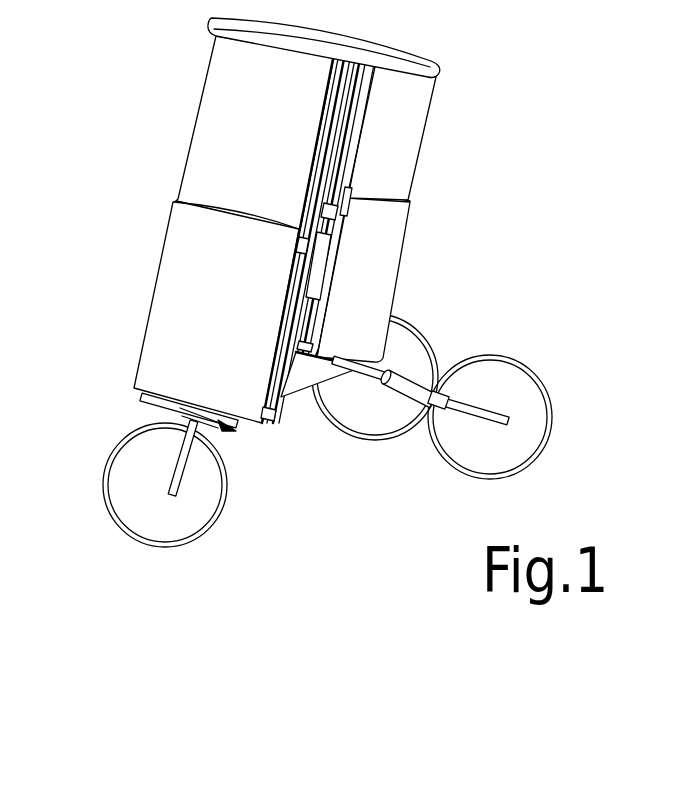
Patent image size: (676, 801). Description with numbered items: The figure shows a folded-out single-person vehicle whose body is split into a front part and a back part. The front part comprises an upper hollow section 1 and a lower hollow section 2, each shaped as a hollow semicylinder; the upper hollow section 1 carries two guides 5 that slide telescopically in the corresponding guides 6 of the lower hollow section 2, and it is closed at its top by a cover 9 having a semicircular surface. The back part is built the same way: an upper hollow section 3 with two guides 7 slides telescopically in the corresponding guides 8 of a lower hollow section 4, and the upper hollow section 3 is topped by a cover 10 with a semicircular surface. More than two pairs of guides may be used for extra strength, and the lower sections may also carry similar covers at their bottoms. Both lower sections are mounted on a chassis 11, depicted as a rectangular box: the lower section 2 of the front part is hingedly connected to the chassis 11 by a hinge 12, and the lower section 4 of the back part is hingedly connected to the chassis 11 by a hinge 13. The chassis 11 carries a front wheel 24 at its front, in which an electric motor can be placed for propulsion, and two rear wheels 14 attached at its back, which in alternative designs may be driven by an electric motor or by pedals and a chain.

The upper hollow section 1 is at (228, 113).
The lower hollow section 2 is at (220, 303).
The upper hollow section 3 is at (395, 114).
The lower hollow section 4 is at (372, 271).
The guides 5 is at (318, 180).
The corresponding guides 6 is at (274, 353).
The guides 7 is at (347, 151).
The corresponding guides 8 is at (340, 233).
The cover 9 is at (280, 32).
The cover 10 is at (378, 53).
The chassis 11 is at (307, 372).
The hinge 12 is at (150, 403).
The hinge 13 is at (356, 355).
The rear wheels 14 is at (428, 332).
The front wheel 24 is at (163, 488).